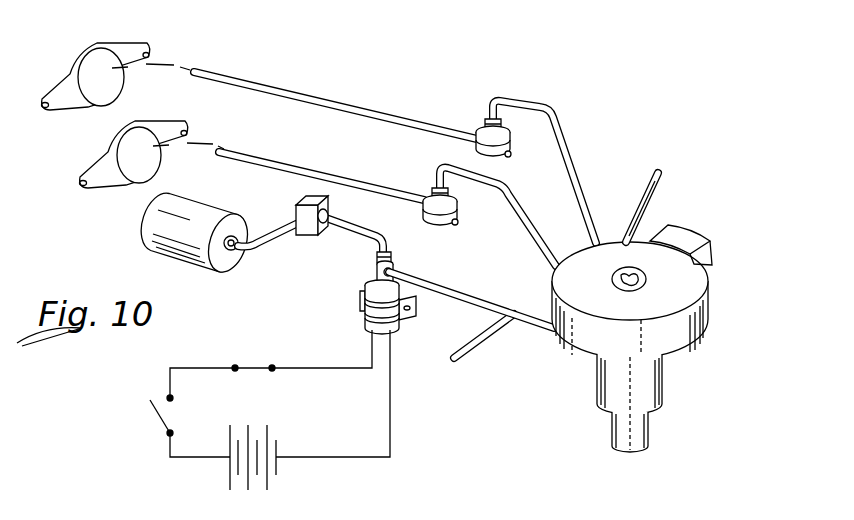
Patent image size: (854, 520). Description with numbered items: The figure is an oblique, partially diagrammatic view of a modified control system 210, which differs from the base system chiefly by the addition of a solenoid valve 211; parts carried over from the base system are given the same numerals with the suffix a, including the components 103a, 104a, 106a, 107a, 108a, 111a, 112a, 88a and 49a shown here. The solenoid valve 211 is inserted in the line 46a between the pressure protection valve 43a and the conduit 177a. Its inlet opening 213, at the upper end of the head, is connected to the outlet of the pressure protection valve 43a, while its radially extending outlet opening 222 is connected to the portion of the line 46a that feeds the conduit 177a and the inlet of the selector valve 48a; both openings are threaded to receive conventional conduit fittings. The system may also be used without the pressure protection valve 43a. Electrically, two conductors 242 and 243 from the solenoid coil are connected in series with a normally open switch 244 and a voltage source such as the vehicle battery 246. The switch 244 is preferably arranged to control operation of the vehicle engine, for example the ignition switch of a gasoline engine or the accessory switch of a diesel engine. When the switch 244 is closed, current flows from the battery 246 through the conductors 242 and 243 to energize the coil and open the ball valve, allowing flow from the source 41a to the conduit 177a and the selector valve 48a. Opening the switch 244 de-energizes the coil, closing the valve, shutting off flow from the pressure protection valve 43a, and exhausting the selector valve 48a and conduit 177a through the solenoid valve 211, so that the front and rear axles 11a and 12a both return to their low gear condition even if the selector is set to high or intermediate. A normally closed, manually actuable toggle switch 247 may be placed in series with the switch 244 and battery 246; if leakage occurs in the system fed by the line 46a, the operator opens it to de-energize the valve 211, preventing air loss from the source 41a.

The rear axle 12a is at (72, 63).
The front axle 11a is at (116, 137).
The rear brake line 112a is at (212, 78).
The front brake line 111a is at (282, 127).
The pressure protection valve 43a is at (293, 200).
The source 41a is at (170, 248).
The rear line fitting 108a is at (478, 128).
The front line fitting 107a is at (457, 209).
The rear connecting tube 104a is at (538, 99).
The front connecting tube 103a is at (510, 207).
The control system 210 is at (591, 105).
The control lever 106a is at (658, 188).
The detent knob 88a is at (690, 233).
The selector valve 48a is at (690, 291).
The dial shaft 49a is at (652, 436).
The line 46a is at (488, 302).
The conduit 177a is at (467, 350).
The inlet opening 213 is at (392, 257).
The outlet opening 222 is at (396, 274).
The solenoid valve 211 is at (364, 312).
The manually actuable switch 247 is at (262, 368).
The conductor 242 is at (345, 346).
The conductor 243 is at (370, 460).
The switch 244 is at (148, 408).
The battery 246 is at (228, 472).